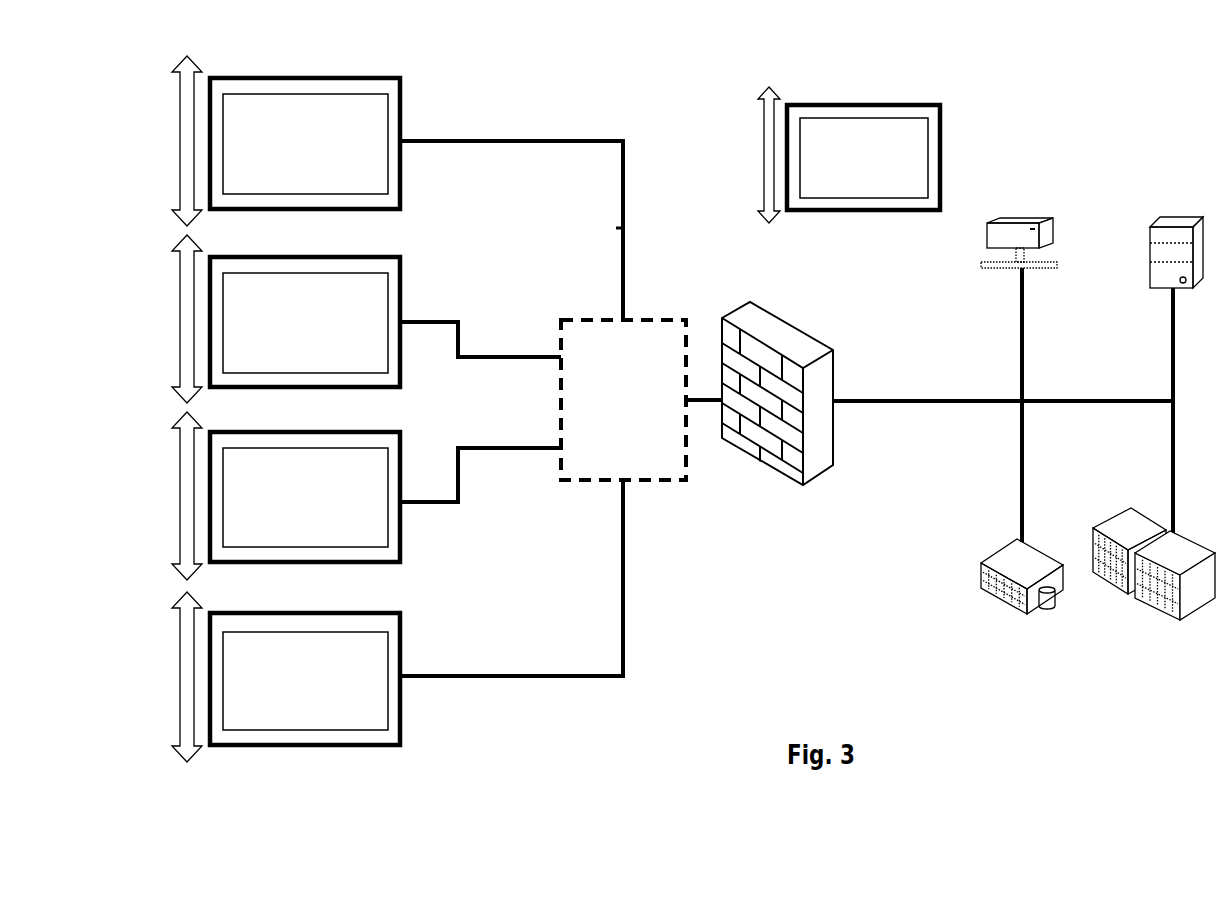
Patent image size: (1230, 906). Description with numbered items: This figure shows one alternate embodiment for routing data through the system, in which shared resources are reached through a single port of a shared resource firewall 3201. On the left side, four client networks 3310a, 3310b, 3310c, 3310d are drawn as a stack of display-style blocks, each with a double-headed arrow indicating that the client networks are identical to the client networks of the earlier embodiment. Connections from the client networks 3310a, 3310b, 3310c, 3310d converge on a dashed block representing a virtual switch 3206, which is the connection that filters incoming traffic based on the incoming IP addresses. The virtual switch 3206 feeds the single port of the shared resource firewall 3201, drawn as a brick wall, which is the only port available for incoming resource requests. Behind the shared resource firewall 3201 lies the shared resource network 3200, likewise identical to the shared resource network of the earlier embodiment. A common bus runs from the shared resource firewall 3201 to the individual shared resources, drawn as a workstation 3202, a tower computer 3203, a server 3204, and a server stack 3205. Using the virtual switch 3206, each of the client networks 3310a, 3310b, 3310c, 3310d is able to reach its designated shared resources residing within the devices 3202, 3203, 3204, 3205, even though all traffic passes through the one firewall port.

The client network 3310a is at (286, 141).
The client network 3310b is at (286, 319).
The client network 3310c is at (286, 496).
The client network 3310d is at (286, 677).
The virtual switch 3206 is at (623, 400).
The shared resource firewall 3201 is at (777, 403).
The shared resource network 3200 is at (849, 176).
The shared resource 3202 is at (1019, 229).
The shared resource 3203 is at (1176, 239).
The shared resource 3204 is at (1022, 591).
The shared resource 3205 is at (1154, 576).